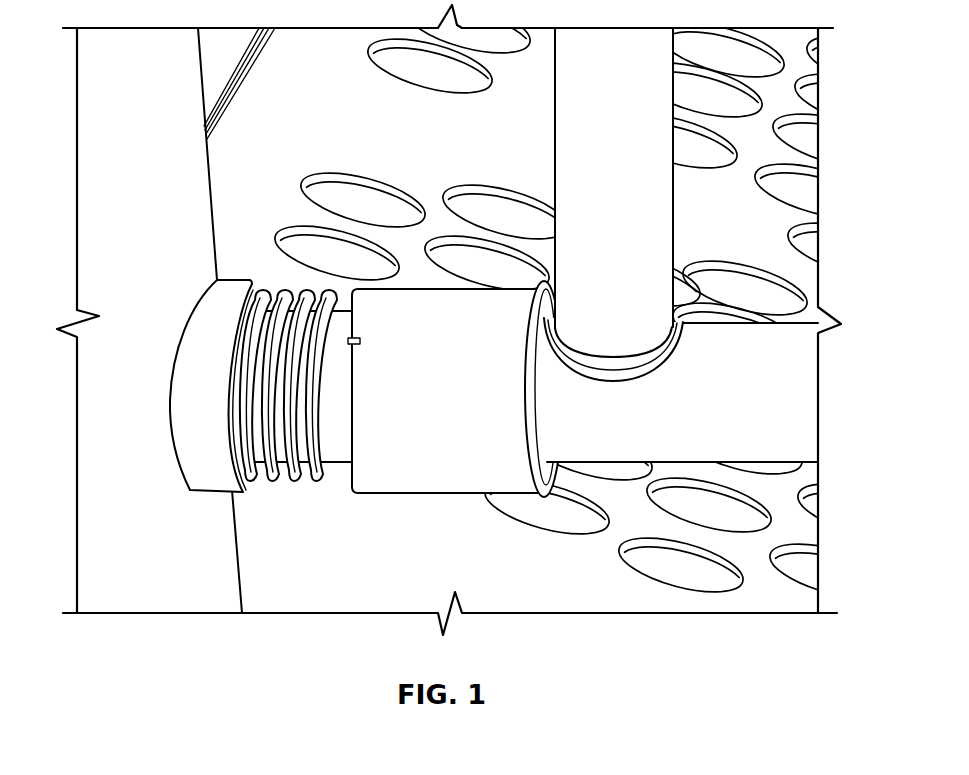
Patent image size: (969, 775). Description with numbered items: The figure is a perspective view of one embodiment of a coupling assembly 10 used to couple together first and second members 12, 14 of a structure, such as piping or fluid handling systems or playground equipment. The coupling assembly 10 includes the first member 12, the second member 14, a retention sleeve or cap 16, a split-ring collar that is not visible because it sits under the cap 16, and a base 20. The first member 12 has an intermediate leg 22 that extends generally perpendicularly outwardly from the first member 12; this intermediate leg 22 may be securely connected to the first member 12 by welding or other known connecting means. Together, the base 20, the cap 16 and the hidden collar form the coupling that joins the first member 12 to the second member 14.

The coupling assembly 10 is at (276, 279).
The first member 12 is at (810, 432).
The second member 14 is at (223, 542).
The retention sleeve or cap 16 is at (413, 482).
The base 20 is at (197, 462).
The intermediate leg 22 is at (660, 193).